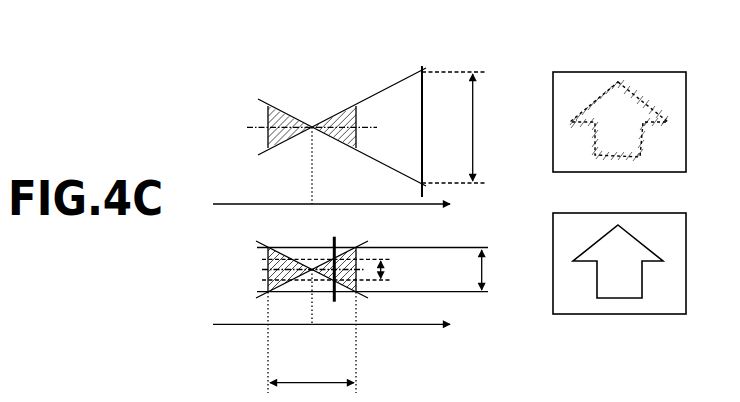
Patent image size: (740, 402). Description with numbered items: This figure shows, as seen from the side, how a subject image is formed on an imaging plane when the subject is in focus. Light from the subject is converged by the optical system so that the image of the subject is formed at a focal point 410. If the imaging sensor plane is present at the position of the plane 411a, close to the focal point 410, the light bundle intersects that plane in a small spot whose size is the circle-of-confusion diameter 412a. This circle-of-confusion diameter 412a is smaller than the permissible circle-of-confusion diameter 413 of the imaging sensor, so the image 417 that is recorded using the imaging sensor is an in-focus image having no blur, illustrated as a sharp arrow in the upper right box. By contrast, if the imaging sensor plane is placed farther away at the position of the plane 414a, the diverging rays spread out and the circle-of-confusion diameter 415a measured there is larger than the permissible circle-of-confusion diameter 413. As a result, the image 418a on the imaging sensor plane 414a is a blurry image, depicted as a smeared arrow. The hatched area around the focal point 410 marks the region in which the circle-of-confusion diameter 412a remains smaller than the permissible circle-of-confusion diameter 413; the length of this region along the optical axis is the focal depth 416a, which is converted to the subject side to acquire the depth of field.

The focal point 410 is at (312, 265).
The plane 411a is at (336, 243).
The circle-of-confusion diameter 412a is at (383, 270).
The permissible circle-of-confusion diameter 413 is at (517, 253).
The plane 414a is at (421, 66).
The circle-of-confusion diameter 415a is at (510, 118).
The focal depth 416a is at (310, 381).
The image 417 is at (640, 242).
The image 418a is at (650, 108).